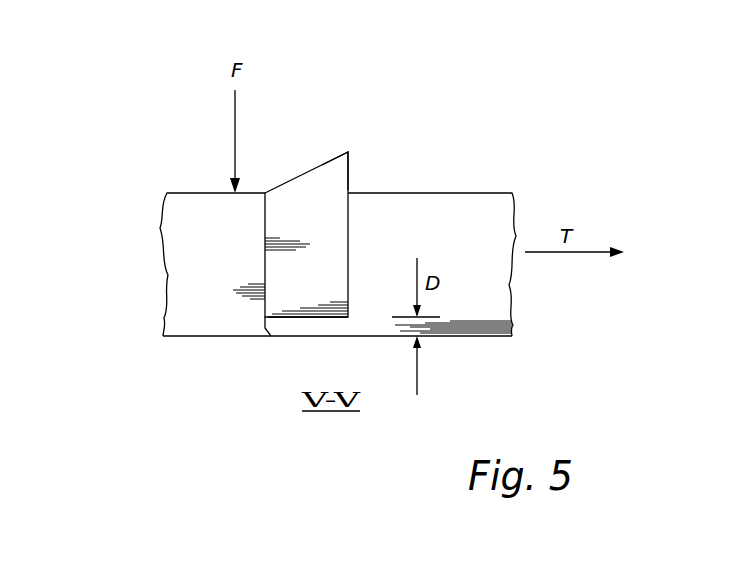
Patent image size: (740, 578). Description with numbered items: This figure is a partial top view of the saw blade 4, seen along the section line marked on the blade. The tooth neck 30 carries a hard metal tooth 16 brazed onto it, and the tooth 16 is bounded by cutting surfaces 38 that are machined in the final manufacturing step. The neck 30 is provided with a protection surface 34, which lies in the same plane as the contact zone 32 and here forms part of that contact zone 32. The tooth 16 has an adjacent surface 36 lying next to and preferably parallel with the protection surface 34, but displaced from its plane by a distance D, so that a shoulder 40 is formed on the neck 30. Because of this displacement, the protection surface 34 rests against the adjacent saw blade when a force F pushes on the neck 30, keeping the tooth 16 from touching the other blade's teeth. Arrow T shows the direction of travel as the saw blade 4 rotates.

The saw blade 4 is at (128, 162).
The tooth neck 30 is at (196, 188).
The tooth 16 is at (293, 175).
The cutting surfaces 38 is at (321, 164).
The adjacent surface 36 is at (315, 320).
The shoulder 40 is at (271, 337).
The protection surface 34 is at (200, 337).
The contact zone 32 is at (436, 338).